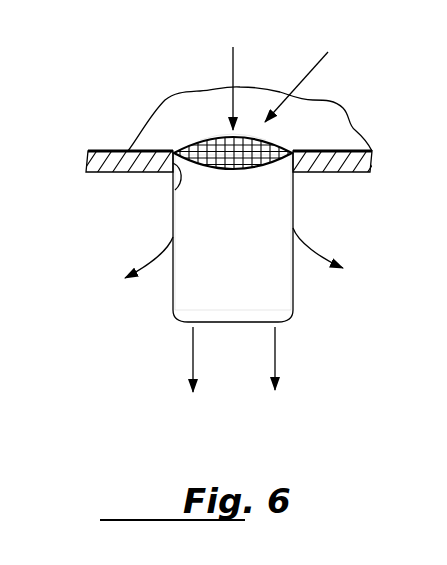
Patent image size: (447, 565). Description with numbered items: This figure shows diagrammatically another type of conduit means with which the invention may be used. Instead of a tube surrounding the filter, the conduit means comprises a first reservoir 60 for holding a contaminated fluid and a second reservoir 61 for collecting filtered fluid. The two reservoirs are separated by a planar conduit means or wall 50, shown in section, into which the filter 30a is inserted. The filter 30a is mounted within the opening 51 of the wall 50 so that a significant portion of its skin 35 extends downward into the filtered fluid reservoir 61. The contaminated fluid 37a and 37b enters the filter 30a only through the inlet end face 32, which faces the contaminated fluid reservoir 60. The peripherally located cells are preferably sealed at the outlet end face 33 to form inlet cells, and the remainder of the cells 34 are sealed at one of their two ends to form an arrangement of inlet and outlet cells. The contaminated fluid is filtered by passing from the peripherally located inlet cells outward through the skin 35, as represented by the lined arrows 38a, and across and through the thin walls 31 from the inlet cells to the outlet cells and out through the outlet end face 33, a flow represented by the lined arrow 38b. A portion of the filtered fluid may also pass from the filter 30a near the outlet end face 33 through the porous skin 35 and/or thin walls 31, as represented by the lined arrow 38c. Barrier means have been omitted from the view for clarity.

The first reservoir 60 is at (205, 22).
The second reservoir 61 is at (248, 443).
The planar conduit means or wall 50 is at (118, 143).
The opening 51 is at (176, 186).
The filter 30a is at (172, 293).
The thin walls 31 is at (282, 140).
The inlet end face 32 is at (219, 136).
The outlet end face 33 is at (187, 323).
The cells 34 is at (203, 143).
The skin 35 is at (247, 238).
The contaminated fluid 37a is at (317, 81).
The contaminated fluid 37b is at (233, 70).
The lined arrows 38a is at (163, 254).
The lined arrow 38b is at (276, 348).
The lined arrow 38c is at (190, 358).